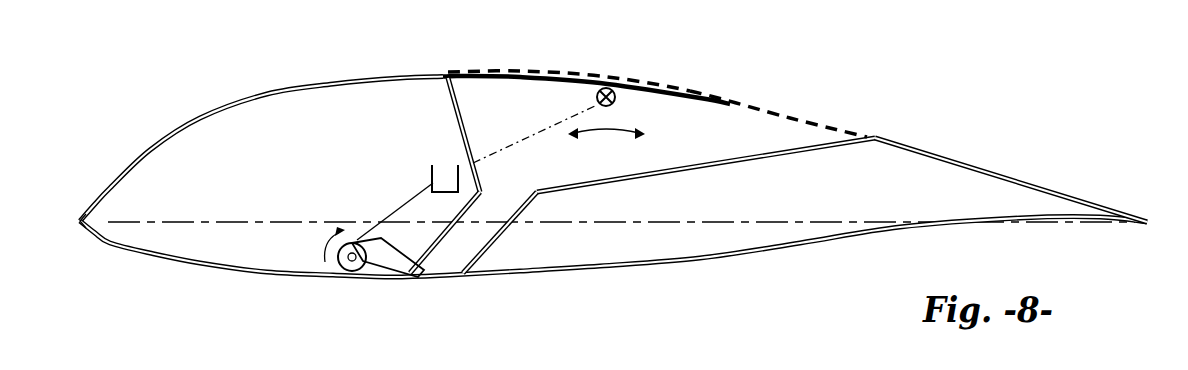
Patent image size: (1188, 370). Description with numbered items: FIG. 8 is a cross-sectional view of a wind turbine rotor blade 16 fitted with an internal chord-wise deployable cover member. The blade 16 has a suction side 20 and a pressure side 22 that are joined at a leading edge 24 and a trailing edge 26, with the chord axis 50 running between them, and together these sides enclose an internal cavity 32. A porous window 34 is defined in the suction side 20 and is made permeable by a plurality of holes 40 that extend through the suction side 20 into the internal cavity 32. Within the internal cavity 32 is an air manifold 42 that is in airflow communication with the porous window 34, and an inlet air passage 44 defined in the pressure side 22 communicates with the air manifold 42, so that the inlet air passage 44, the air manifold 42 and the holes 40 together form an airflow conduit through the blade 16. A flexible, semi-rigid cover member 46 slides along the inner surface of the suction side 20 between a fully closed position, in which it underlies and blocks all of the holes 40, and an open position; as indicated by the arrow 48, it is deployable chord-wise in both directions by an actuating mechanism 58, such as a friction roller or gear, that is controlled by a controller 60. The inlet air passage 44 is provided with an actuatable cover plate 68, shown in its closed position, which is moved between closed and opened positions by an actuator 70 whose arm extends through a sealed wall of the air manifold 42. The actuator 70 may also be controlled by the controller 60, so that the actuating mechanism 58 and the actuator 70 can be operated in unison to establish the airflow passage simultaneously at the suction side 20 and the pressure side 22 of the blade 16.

The wind turbine rotor blade 16 is at (966, 105).
The suction side 20 is at (341, 86).
The pressure side 22 is at (196, 268).
The leading edge 24 is at (78, 221).
The trailing edge 26 is at (1148, 222).
The internal cavity 32 is at (898, 173).
The porous window 34 is at (568, 60).
The holes 40 is at (738, 102).
The air manifold 42 is at (748, 163).
The inlet air passage 44 is at (414, 293).
The cover member 46 is at (400, 90).
The arrow 48 is at (610, 138).
The chord axis 50 is at (153, 221).
The actuating mechanism 58 is at (614, 106).
The controller 60 is at (442, 163).
The cover plate 68 is at (435, 278).
The actuator 70 is at (352, 242).